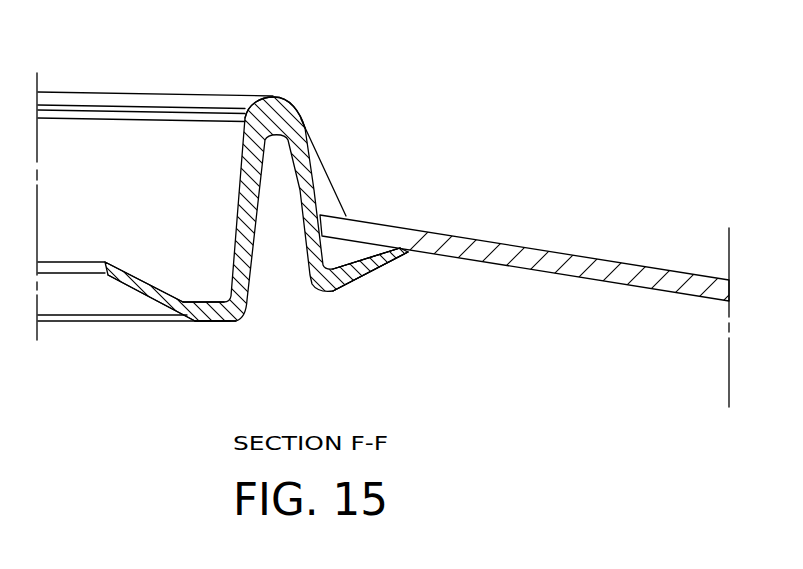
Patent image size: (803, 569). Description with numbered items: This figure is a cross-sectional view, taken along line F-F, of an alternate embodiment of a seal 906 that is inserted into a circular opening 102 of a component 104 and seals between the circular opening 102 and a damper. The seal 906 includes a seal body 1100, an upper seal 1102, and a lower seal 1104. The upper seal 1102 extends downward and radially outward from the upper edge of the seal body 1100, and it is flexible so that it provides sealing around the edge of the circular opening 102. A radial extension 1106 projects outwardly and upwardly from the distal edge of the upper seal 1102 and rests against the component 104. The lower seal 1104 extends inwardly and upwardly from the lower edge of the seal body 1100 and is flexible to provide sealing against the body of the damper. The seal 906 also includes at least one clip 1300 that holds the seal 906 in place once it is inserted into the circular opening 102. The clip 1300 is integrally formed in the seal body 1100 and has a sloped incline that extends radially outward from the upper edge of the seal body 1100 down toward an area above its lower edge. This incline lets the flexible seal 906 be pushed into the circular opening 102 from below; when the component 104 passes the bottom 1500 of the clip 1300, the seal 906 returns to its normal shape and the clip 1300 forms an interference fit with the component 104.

The circular opening 102 is at (209, 143).
The component 104 is at (495, 253).
The seal 906 is at (279, 62).
The seal body 1100 is at (236, 215).
The upper seal 1102 is at (352, 280).
The lower seal 1104 is at (134, 289).
The radial extension 1106 is at (358, 280).
The clip 1300 is at (330, 183).
The bottom of the clip 1500 is at (342, 264).